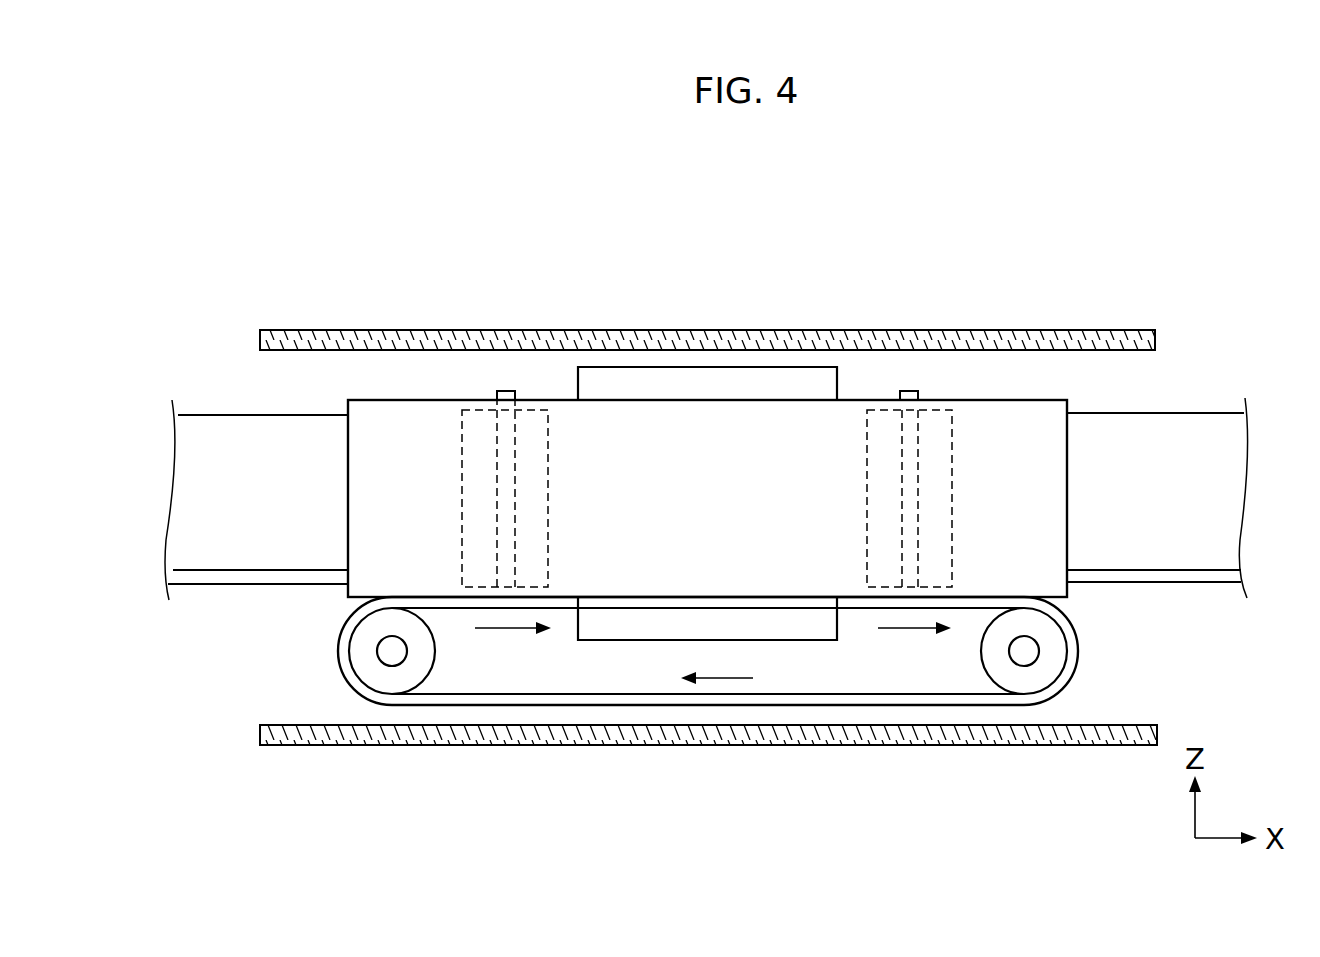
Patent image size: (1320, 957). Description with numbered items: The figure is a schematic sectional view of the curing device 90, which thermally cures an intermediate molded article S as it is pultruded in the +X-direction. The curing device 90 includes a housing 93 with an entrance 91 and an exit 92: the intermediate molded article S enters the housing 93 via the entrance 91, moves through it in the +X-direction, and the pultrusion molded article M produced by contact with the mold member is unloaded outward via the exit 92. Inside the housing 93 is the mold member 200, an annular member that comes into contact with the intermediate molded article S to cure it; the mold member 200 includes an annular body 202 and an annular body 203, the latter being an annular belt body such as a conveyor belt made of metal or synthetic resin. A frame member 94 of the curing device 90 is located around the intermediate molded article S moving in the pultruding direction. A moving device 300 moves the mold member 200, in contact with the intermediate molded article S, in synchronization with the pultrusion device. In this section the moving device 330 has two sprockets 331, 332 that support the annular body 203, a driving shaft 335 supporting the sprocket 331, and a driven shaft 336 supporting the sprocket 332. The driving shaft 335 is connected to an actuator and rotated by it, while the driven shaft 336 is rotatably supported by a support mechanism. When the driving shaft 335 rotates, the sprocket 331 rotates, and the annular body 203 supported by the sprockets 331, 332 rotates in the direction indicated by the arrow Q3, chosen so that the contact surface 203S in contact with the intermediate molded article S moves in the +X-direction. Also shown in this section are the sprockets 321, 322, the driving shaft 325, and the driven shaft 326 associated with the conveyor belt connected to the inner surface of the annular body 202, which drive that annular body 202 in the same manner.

The curing device 90 is at (1052, 285).
The entrance 91 is at (260, 398).
The exit 92 is at (1152, 396).
The housing 93 is at (793, 330).
The frame member 94 is at (723, 367).
The mold member 200 is at (652, 537).
The annular body 202 is at (396, 412).
The annular body 203 is at (652, 690).
The contact surface 203S is at (790, 597).
The moving device 300 is at (616, 651).
The moving device 330 is at (326, 619).
The sprocket 331 is at (1035, 671).
The sprocket 332 is at (380, 671).
The driving shaft 335 is at (1024, 652).
The driven shaft 336 is at (392, 652).
The sprocket 321 is at (933, 423).
The sprocket 322 is at (530, 423).
The driving shaft 325 is at (906, 390).
The driven shaft 326 is at (503, 390).
The rotation direction arrow Q3 is at (903, 632).
The intermediate molded article S is at (216, 415).
The pultrusion molded article M is at (1210, 413).